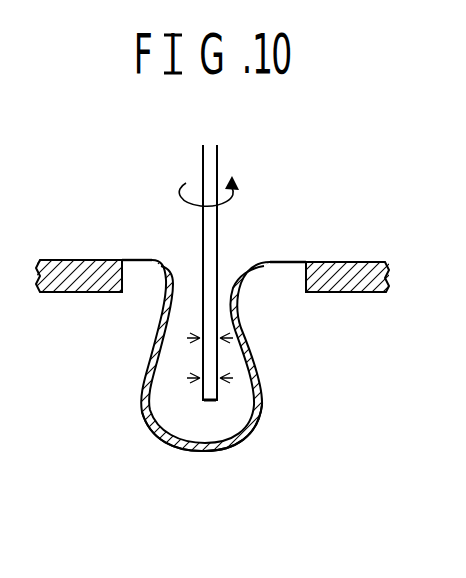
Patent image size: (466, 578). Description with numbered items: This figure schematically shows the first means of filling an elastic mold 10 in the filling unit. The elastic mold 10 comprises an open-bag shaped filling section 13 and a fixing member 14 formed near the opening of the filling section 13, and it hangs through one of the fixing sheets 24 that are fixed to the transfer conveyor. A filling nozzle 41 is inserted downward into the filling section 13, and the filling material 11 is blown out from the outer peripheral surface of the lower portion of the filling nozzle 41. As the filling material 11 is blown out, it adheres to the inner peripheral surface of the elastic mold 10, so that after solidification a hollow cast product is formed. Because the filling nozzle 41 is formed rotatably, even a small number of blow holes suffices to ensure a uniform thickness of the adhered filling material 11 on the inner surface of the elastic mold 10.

The elastic mold 10 is at (233, 374).
The filling material 11 is at (215, 453).
The filling section 13 is at (140, 392).
The fixing member 14 is at (296, 261).
The fixing sheet 24 is at (352, 293).
The filling nozzle 41 is at (206, 158).